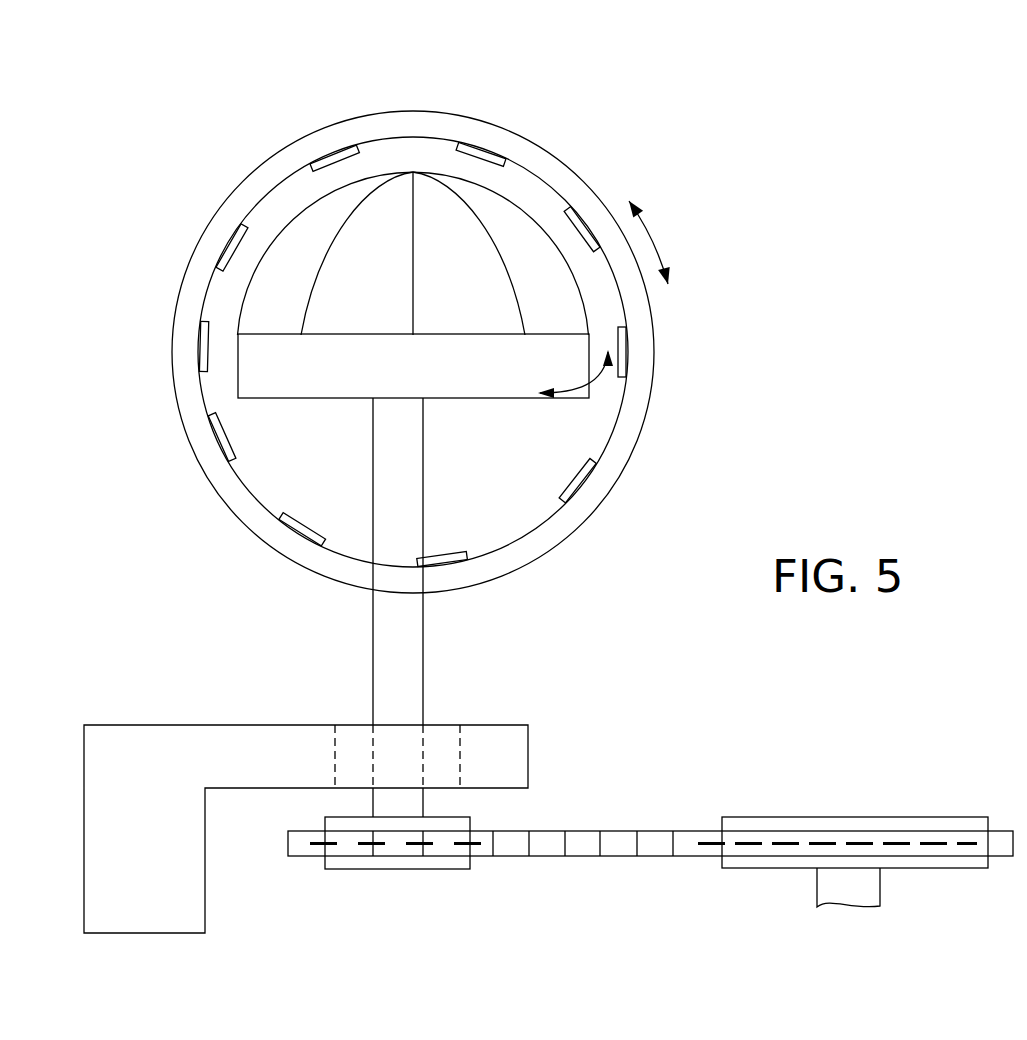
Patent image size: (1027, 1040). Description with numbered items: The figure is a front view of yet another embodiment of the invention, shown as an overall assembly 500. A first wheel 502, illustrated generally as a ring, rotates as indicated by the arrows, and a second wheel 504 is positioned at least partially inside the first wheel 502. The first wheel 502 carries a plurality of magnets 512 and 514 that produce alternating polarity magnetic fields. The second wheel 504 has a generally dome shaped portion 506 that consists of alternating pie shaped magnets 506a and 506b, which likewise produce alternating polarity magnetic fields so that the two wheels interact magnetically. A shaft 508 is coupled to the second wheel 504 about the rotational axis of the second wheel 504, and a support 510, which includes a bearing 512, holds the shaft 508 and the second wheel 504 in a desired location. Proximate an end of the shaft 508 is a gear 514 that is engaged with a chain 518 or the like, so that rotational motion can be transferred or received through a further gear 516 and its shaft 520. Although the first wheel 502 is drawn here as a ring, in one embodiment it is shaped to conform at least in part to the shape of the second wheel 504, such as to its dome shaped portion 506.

The imaging system 500 is at (726, 153).
The first wheel 502 is at (570, 160).
The second wheel 504 is at (492, 400).
The dome shaped portion 506 is at (460, 183).
The pie shaped magnet 506a is at (297, 235).
The pie shaped magnet 506b is at (396, 227).
The shaft 508 is at (373, 683).
The support 510 is at (173, 725).
The magnet 512 is at (230, 245).
The magnet 514 is at (327, 152).
The gear 516 is at (882, 817).
The rail 518 is at (612, 830).
The shaft 520 is at (880, 882).